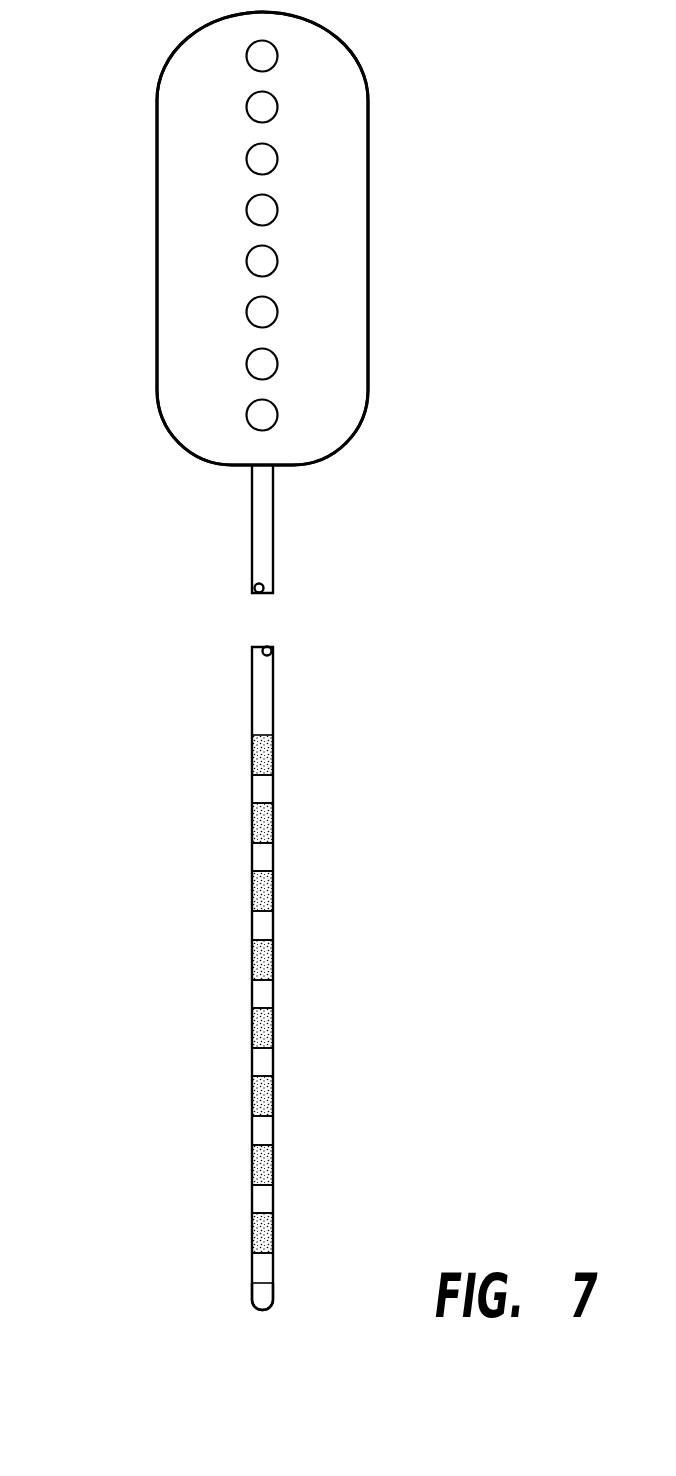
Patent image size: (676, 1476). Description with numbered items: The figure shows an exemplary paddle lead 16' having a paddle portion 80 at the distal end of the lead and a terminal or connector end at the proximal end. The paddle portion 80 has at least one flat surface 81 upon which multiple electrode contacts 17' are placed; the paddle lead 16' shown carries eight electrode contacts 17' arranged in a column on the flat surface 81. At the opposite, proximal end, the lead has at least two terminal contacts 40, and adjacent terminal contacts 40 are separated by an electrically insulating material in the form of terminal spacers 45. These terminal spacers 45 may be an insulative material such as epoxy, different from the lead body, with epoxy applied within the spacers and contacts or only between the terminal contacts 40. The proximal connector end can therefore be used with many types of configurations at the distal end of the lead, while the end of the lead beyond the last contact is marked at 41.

The paddle portion 80 is at (333, 281).
The flat surface 81 is at (197, 243).
The electrode contacts 17' is at (350, 238).
The paddle lead 16' is at (204, 887).
The terminal contacts 40 is at (251, 752).
The terminal spacers 45 is at (274, 792).
The distal tip 41 is at (251, 1295).